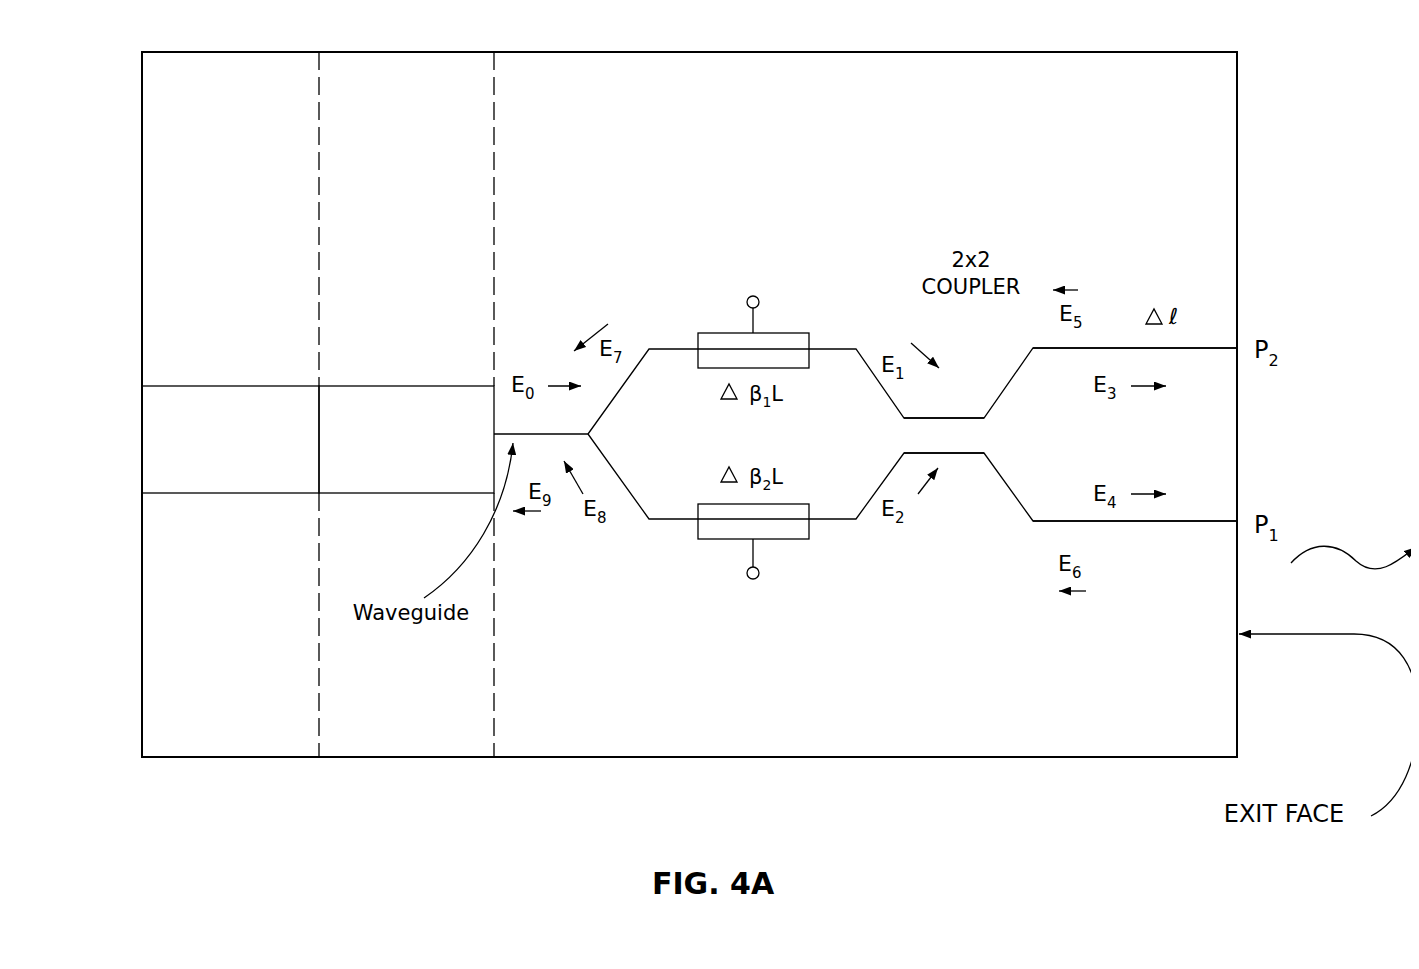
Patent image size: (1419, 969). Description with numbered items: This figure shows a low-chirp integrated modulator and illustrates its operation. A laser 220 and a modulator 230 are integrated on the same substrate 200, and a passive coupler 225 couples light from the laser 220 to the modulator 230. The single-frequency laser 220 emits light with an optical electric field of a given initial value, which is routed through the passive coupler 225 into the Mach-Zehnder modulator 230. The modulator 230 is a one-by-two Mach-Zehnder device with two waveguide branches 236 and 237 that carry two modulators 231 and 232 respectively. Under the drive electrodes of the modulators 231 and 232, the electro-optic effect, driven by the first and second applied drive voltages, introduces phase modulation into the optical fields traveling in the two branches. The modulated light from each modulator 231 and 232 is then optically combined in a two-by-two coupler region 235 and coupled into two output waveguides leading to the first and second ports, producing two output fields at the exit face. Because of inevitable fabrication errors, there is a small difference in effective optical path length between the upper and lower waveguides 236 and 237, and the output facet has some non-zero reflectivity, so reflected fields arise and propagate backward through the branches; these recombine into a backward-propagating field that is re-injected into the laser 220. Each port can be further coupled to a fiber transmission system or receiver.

The substrate 200 is at (280, 756).
The laser 220 is at (240, 384).
The passive coupler 225 is at (406, 384).
The modulator 230 is at (1212, 140).
The modulator 231 is at (697, 345).
The modulator 232 is at (697, 532).
The 2×2 coupler region 235 is at (958, 417).
The output waveguide branch 236 is at (1117, 347).
The output waveguide branch 237 is at (1130, 523).